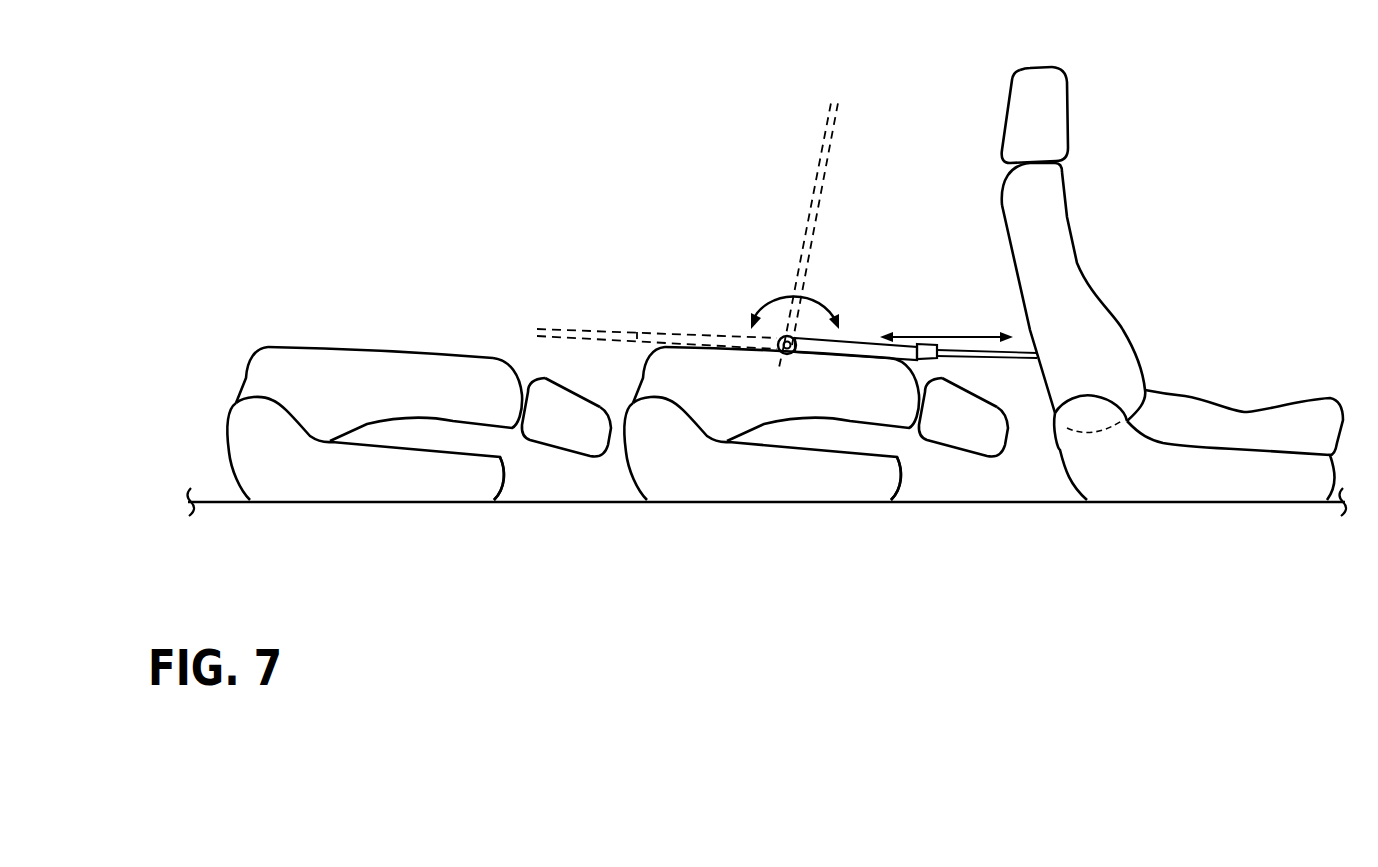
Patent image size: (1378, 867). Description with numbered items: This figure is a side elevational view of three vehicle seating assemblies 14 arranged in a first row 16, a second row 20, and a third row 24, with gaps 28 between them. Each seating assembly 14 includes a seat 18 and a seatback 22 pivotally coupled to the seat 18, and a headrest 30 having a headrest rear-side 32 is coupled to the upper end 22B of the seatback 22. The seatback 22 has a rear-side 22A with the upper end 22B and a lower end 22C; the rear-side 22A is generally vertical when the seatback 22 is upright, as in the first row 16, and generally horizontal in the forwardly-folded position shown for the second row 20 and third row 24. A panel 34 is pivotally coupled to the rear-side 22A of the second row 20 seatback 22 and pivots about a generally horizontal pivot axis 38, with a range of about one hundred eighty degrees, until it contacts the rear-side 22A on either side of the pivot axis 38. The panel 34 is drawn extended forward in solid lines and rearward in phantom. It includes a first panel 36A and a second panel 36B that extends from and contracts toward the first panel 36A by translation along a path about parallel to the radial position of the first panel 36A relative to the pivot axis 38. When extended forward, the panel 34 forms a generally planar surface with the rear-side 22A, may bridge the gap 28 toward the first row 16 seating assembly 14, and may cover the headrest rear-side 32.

The vehicle seating assembly 14 is at (259, 460).
The first row 16 is at (1160, 490).
The seat 18 is at (410, 491).
The second row 20 is at (752, 488).
The seatback 22 is at (687, 344).
The rear-side 22A is at (395, 350).
The upper end 22B is at (505, 357).
The lower end 22C is at (261, 345).
The third row 24 is at (344, 488).
The gap 28 is at (548, 486).
The headrest 30 is at (795, 243).
The headrest rear-side 32 is at (577, 393).
The panel 34 is at (867, 327).
The first panel 36A is at (850, 343).
The second panel 36B is at (1028, 347).
The pivot axis 38 is at (783, 355).